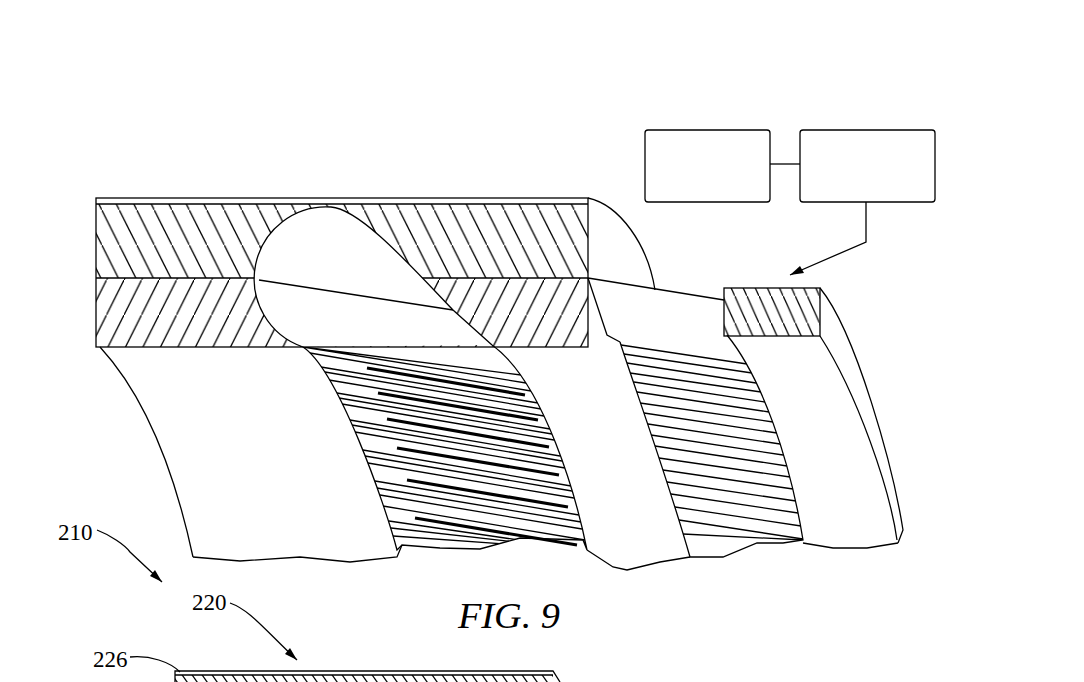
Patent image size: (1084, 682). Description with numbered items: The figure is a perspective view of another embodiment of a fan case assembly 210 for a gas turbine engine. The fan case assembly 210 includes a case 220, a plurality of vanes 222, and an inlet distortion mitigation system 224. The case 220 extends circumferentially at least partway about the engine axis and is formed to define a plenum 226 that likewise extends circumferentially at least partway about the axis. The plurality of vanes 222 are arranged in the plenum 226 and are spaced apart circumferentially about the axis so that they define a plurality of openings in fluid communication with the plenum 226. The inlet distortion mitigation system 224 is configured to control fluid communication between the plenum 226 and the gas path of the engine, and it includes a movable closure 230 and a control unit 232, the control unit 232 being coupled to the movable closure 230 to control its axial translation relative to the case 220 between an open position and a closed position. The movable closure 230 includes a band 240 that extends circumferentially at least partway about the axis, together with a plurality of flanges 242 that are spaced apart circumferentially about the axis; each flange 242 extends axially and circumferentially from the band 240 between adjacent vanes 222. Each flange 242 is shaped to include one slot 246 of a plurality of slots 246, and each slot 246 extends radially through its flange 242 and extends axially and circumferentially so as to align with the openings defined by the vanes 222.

The fan case assembly 210 is at (167, 147).
The case 220 is at (84, 258).
The vanes 222 is at (377, 292).
The inlet distortion mitigation system 224 is at (832, 72).
The plenum 226 is at (317, 248).
The movable closure 230 is at (857, 130).
The control unit 232 is at (705, 130).
The band 240 is at (845, 320).
The flanges 242 is at (728, 527).
The slots 246 is at (548, 490).